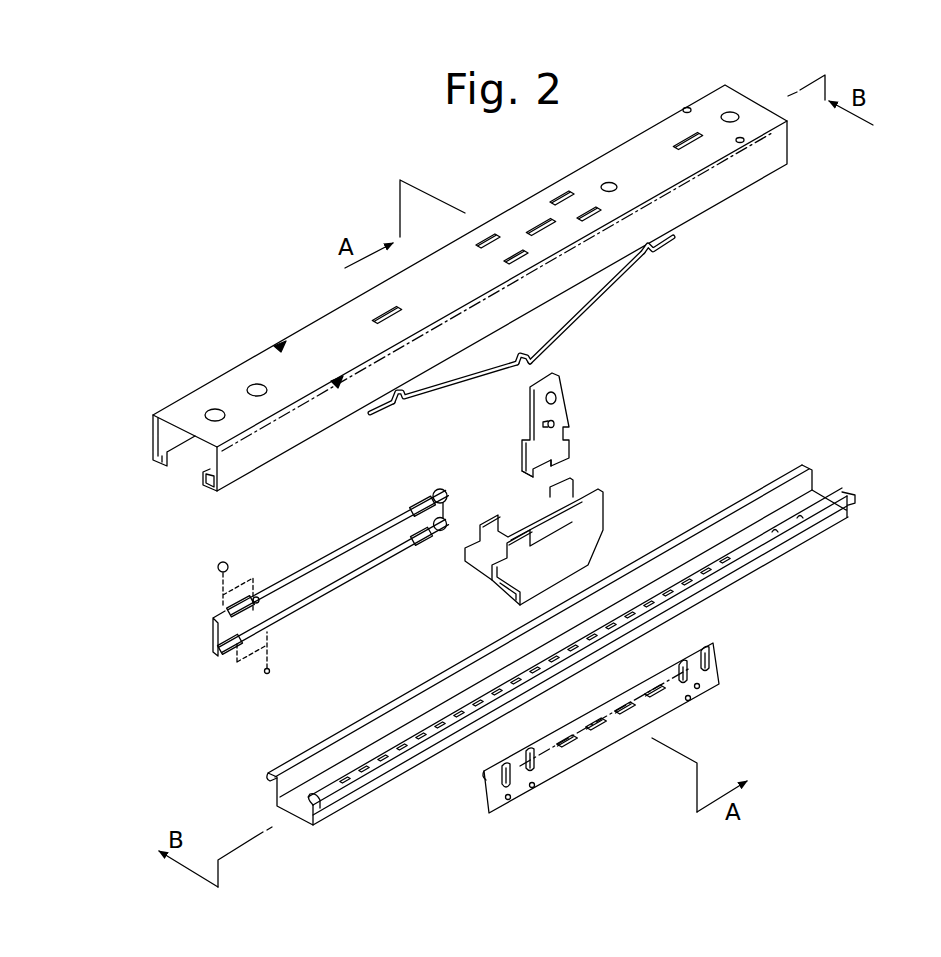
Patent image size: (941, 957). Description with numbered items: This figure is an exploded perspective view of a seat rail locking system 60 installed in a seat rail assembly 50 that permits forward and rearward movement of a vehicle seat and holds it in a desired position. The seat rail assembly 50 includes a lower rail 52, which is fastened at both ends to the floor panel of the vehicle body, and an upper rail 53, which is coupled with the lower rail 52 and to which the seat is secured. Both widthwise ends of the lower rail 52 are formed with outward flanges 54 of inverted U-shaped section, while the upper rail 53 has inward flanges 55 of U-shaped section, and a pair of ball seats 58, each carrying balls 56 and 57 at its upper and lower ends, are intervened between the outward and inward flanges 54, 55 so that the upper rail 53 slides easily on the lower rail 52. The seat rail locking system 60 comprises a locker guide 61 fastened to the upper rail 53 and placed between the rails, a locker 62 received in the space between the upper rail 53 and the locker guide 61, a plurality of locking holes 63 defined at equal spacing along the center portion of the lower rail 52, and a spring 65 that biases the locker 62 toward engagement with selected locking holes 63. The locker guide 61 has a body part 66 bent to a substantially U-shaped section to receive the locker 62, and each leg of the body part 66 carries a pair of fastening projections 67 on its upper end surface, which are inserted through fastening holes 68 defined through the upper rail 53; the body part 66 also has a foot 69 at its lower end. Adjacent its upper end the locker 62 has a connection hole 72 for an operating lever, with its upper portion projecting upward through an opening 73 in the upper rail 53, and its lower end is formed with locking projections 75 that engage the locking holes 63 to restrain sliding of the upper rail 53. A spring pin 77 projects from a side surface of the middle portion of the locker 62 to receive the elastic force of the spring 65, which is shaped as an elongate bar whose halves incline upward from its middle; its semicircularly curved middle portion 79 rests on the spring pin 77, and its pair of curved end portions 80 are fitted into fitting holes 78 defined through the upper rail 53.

The seat rail assembly 50 is at (772, 351).
The lower rail 52 is at (530, 647).
The upper rail 53 is at (207, 386).
The outward flange 54 is at (267, 774).
The inward flange 55 is at (158, 462).
The ball 56 is at (218, 567).
The ball 57 is at (266, 675).
The ball seat 58 is at (213, 650).
The seat rail locking system 60 is at (648, 401).
The locker guide 61 is at (538, 542).
The locker 62 is at (546, 415).
The locking holes 63 is at (733, 553).
The spring 65 is at (538, 347).
The body part 66 is at (602, 525).
The fastening projections 67 is at (590, 489).
The fastening holes 68 is at (484, 237).
The foot of slider block 69 is at (492, 584).
The connection hole 72 is at (546, 408).
The opening 73 is at (537, 224).
The locking projections 75 is at (528, 466).
The spring pin 77 is at (565, 420).
The fitting holes 78 is at (383, 318).
The curved portion 79 is at (535, 358).
The curved portions 80 is at (649, 252).